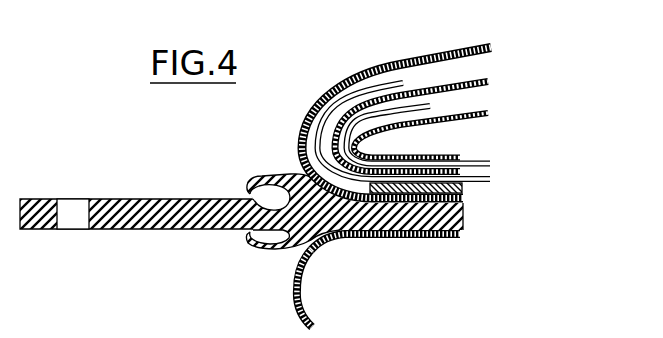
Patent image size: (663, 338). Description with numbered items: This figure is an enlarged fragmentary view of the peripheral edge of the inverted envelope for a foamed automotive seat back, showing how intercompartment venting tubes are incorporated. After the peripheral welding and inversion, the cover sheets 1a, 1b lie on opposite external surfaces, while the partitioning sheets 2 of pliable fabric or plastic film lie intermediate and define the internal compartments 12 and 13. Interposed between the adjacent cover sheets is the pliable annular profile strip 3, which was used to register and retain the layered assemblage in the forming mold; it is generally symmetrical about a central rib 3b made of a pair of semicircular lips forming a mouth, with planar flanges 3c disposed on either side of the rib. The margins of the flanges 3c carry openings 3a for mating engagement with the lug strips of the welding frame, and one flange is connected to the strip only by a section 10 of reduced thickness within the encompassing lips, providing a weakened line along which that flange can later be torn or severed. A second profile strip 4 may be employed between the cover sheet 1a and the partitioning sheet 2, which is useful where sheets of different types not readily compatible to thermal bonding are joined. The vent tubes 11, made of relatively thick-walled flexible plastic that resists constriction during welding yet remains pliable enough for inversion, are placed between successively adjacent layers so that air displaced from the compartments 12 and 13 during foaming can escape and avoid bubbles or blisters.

The cover sheet 1a is at (405, 238).
The cover sheet 1b is at (323, 98).
The partitioning sheet 2 is at (474, 112).
The profile strip 3 is at (215, 188).
The opening 3a is at (74, 208).
The central rib 3b is at (279, 183).
The planar flange 3c is at (147, 216).
The second profile strip 4 is at (464, 189).
The section of reduced thickness 10 is at (313, 253).
The vent tube 11 is at (399, 117).
The compartment 12 is at (422, 76).
The compartment 13 is at (460, 98).